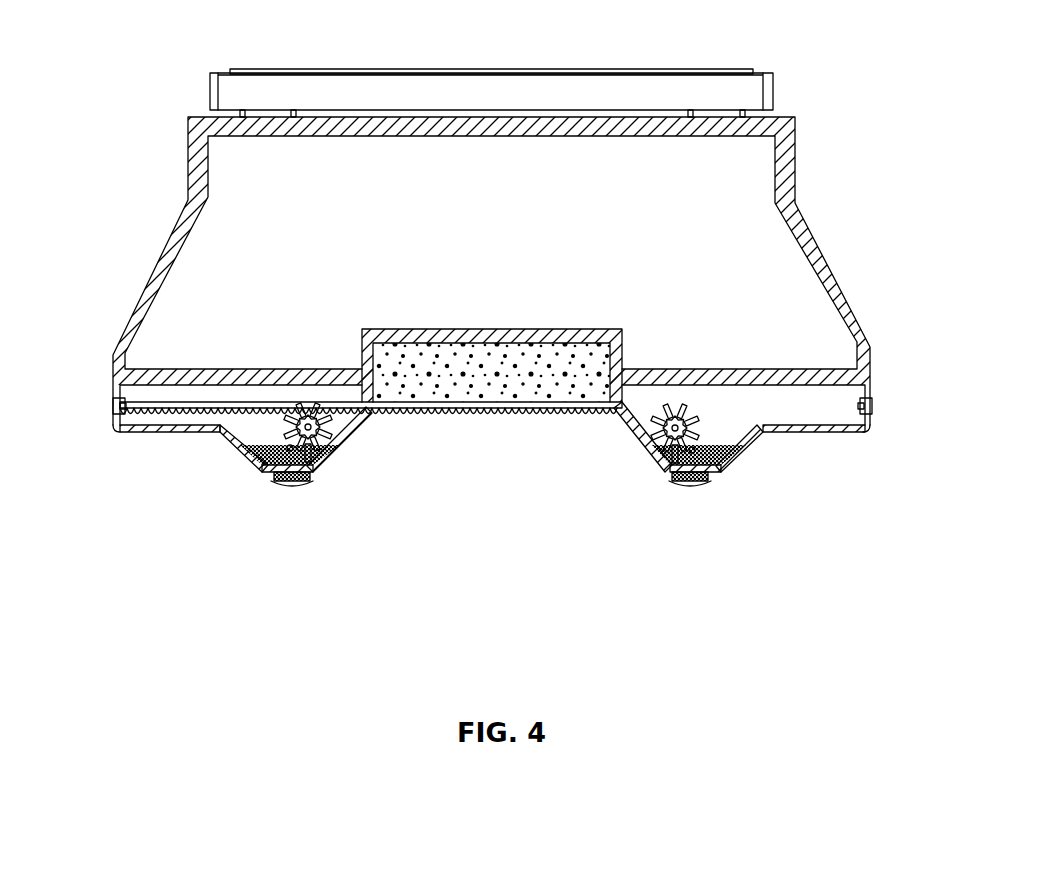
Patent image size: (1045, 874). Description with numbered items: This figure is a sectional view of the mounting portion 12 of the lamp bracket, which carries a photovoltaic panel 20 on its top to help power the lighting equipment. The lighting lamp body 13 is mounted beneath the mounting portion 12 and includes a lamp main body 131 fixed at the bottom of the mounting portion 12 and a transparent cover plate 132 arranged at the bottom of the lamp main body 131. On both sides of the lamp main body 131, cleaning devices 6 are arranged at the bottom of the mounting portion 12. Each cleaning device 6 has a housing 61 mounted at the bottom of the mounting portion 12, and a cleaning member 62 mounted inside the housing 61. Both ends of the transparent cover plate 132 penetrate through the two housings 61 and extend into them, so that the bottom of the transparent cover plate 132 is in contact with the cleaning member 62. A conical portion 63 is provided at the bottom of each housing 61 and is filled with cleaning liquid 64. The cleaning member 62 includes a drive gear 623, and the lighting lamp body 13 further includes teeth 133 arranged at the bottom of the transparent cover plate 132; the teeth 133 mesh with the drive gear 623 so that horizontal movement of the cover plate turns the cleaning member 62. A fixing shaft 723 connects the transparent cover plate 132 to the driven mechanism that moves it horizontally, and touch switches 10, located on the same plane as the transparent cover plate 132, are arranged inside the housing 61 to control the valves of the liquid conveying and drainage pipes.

The photovoltaic panel 20 is at (497, 92).
The mounting portion 12 is at (796, 160).
The touch switches 10 is at (116, 406).
The fixing shaft 723 is at (117, 428).
The lighting lamp body 13 is at (371, 462).
The lamp main body 131 is at (508, 390).
The transparent cover plate 132 is at (415, 545).
The teeth 133 is at (441, 408).
The cleaning device 6 is at (492, 506).
The housing 61 is at (165, 435).
The cleaning member 62 is at (333, 450).
The conical portion 63 is at (250, 455).
The cleaning liquid 64 is at (287, 472).
The drive gear 623 is at (491, 435).